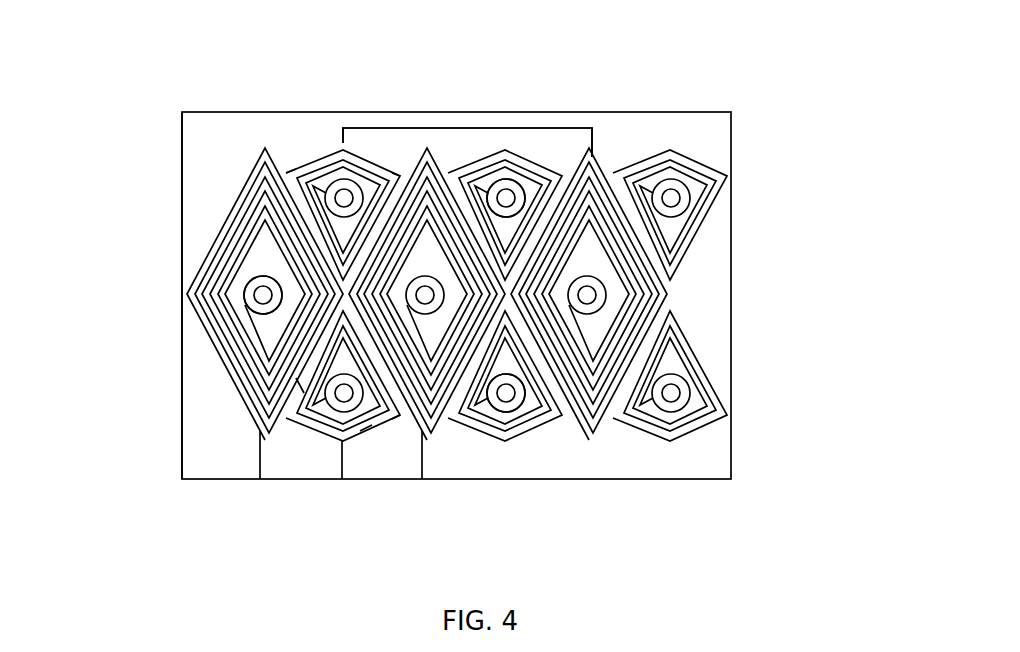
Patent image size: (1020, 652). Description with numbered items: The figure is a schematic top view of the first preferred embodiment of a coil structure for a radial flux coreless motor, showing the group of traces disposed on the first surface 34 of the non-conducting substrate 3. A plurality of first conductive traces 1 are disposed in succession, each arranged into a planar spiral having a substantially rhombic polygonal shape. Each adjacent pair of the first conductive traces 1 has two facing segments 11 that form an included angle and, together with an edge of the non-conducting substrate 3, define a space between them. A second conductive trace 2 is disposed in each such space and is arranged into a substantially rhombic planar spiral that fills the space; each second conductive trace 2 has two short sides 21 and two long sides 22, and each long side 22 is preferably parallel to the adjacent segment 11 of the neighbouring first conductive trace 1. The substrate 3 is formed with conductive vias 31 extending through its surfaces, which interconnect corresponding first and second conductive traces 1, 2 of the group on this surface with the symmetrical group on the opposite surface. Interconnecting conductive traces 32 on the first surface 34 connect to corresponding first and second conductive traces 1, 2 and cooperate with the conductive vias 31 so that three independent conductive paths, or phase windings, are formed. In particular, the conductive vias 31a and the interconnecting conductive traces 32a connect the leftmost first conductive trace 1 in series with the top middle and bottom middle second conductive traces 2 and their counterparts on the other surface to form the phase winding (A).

The first conductive trace 1 is at (398, 231).
The second conductive trace 2 is at (310, 145).
The non-conducting substrate 3 is at (211, 100).
The segment 11 is at (270, 143).
The short side 21 is at (313, 432).
The long side 22 is at (300, 383).
The conductive via 31 is at (244, 290).
The conductive via 31a is at (390, 286).
The interconnecting conductive trace 32 is at (488, 127).
The interconnecting conductive trace 32a is at (518, 313).
The first surface 34 is at (193, 160).